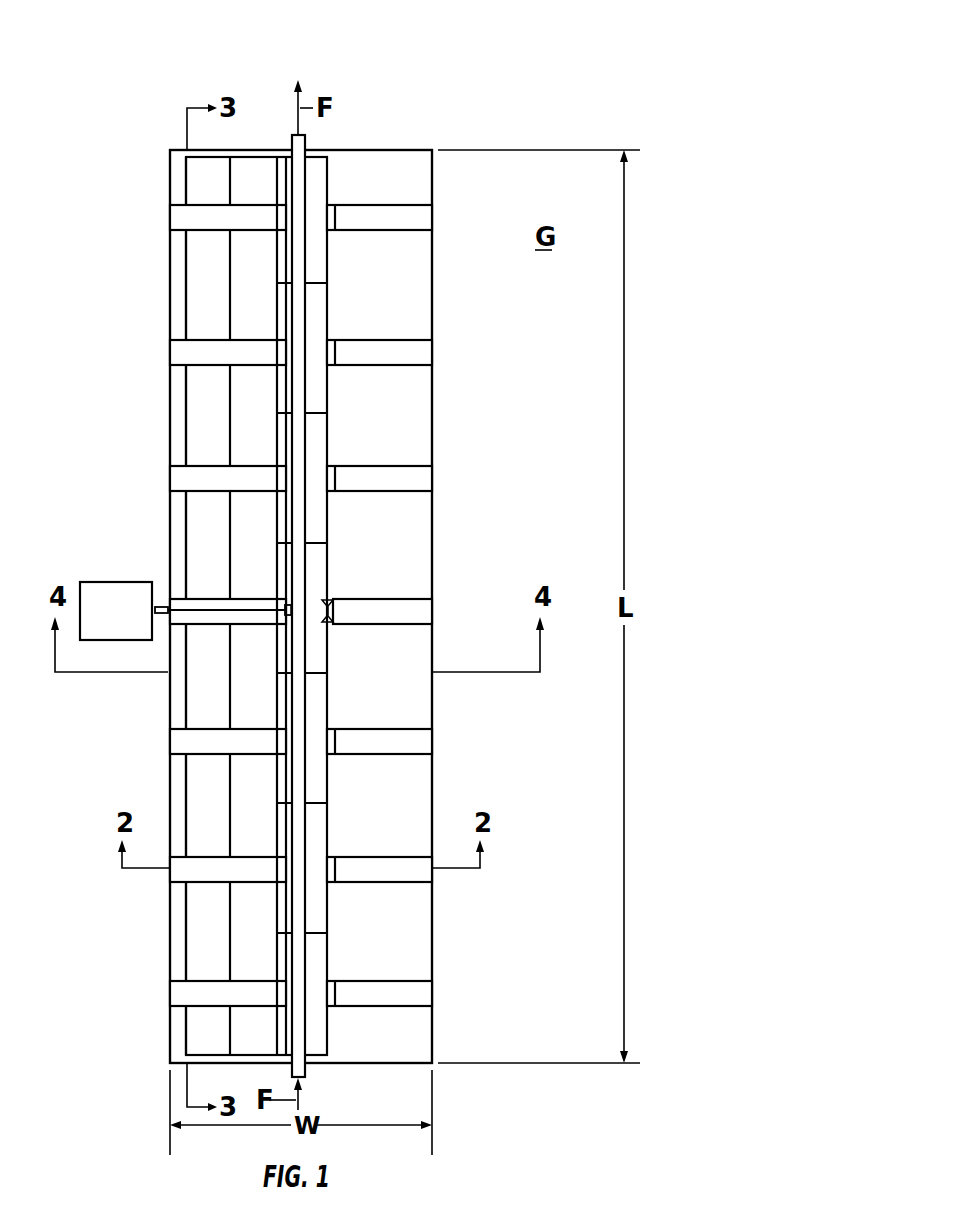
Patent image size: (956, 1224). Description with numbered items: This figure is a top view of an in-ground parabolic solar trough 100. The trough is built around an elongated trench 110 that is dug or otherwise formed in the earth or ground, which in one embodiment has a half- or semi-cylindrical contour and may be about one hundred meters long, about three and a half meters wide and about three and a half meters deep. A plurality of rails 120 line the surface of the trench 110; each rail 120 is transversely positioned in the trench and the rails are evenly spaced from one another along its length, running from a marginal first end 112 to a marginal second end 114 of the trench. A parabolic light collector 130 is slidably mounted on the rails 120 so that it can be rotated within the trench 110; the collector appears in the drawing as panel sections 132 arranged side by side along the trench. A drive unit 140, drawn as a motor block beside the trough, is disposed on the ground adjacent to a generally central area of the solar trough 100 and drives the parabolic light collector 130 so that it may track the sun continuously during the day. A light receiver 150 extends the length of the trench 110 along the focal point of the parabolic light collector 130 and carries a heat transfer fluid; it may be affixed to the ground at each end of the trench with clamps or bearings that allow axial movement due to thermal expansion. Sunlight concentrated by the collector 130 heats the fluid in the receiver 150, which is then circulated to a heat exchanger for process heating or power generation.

The in-ground parabolic solar trough 100 is at (243, 58).
The trench 110 is at (380, 151).
The marginal first end 112 is at (392, 157).
The marginal second end 114 is at (325, 1065).
The rails 120 is at (190, 355).
The parabolic light collector 130 is at (180, 536).
The panel sections 132 is at (210, 160).
The drive unit 140 is at (142, 574).
The light receiver 150 is at (304, 182).